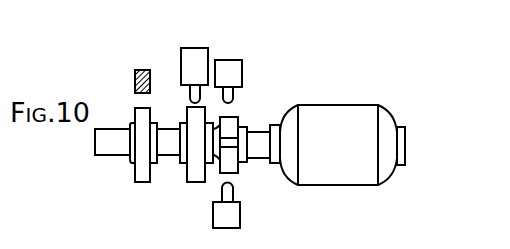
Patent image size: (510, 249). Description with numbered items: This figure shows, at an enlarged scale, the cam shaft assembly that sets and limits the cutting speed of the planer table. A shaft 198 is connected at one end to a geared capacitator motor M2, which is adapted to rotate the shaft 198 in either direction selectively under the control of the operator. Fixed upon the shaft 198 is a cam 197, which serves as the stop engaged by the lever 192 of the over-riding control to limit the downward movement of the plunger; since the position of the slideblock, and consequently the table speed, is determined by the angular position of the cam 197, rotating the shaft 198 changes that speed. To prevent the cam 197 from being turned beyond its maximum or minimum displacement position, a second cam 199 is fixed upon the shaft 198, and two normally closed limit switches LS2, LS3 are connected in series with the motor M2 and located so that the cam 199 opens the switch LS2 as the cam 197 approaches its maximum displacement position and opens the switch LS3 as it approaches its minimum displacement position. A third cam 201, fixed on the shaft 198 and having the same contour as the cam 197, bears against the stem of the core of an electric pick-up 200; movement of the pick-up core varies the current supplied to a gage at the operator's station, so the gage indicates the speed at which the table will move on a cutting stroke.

The lever 192 is at (138, 70).
The cam 197 is at (140, 171).
The shaft 198 is at (111, 128).
The cam 199 is at (232, 113).
The electric pick-up 200 is at (195, 53).
The cam 201 is at (200, 182).
The limit switch LS2 is at (228, 65).
The limit switch LS3 is at (240, 213).
The geared capacitator motor M2 is at (320, 159).